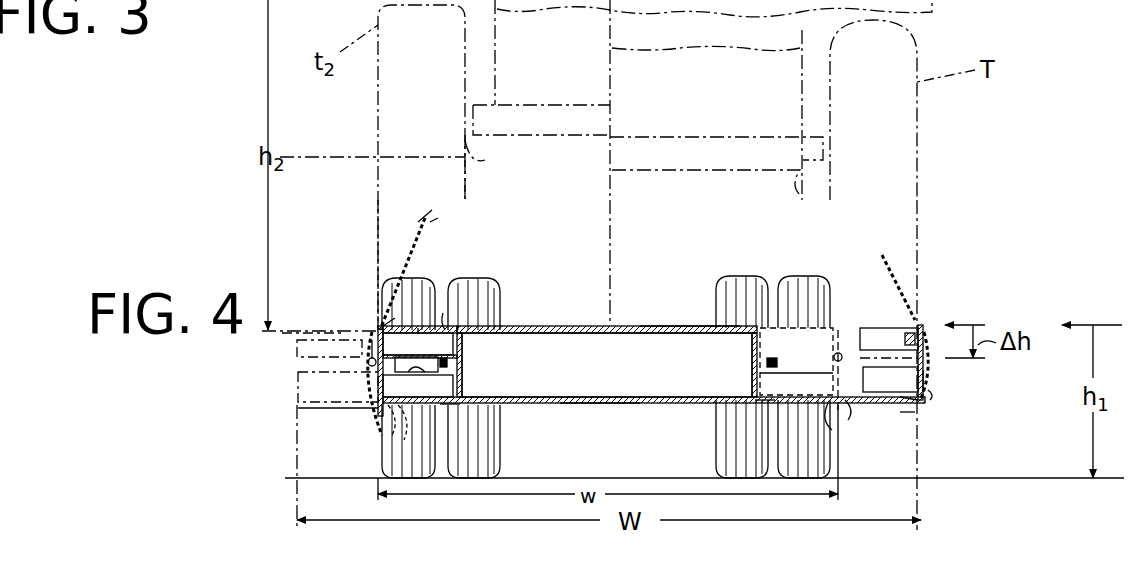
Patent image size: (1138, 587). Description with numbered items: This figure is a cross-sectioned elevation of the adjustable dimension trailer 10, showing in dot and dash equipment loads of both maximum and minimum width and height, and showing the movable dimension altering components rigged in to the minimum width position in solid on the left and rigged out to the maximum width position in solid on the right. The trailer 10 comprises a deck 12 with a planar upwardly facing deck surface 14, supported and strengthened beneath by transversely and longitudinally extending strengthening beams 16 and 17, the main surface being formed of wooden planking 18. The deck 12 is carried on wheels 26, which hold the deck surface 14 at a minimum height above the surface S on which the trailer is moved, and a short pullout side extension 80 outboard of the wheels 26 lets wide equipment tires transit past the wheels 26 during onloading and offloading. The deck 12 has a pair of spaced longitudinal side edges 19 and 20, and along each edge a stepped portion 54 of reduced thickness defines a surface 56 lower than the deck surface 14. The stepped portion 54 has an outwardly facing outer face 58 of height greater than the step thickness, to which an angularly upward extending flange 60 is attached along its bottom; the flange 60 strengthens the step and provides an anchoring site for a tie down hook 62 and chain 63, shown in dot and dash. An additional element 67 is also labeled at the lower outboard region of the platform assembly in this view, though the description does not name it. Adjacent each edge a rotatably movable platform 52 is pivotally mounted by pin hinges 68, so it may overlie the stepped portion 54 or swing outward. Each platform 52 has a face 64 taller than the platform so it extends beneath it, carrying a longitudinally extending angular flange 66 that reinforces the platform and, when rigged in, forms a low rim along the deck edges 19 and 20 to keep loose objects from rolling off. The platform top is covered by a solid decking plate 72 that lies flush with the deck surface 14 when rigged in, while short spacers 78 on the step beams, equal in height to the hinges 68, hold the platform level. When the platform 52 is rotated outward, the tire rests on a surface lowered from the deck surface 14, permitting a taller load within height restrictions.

The adjustable dimension trailer 10 is at (575, 318).
The deck 12 is at (593, 408).
The deck surface 14 is at (685, 320).
The transversely extending strengthening beam 16 is at (614, 392).
The longitudinally extending strengthening beam 17 is at (468, 354).
The wooden planking 18 is at (635, 326).
The side edge 19 is at (380, 330).
The side edge 20 is at (762, 375).
The wheels 26 is at (425, 438).
The rotatably movable platform 52 is at (295, 379).
The stepped portion 54 is at (445, 409).
The surface 56 is at (415, 367).
The outer face 58 is at (380, 385).
The flange 60 is at (385, 425).
The tie down hook 62 is at (392, 443).
The chain 63 is at (402, 252).
The face 64 is at (372, 334).
The angular flange 66 is at (385, 330).
The lower bracket 67 is at (295, 403).
The pin hinge 68 is at (368, 362).
The decking plate 72 is at (418, 328).
The spacer 78 is at (455, 368).
The pullout side extension 80 is at (295, 347).
The surface S is at (975, 474).